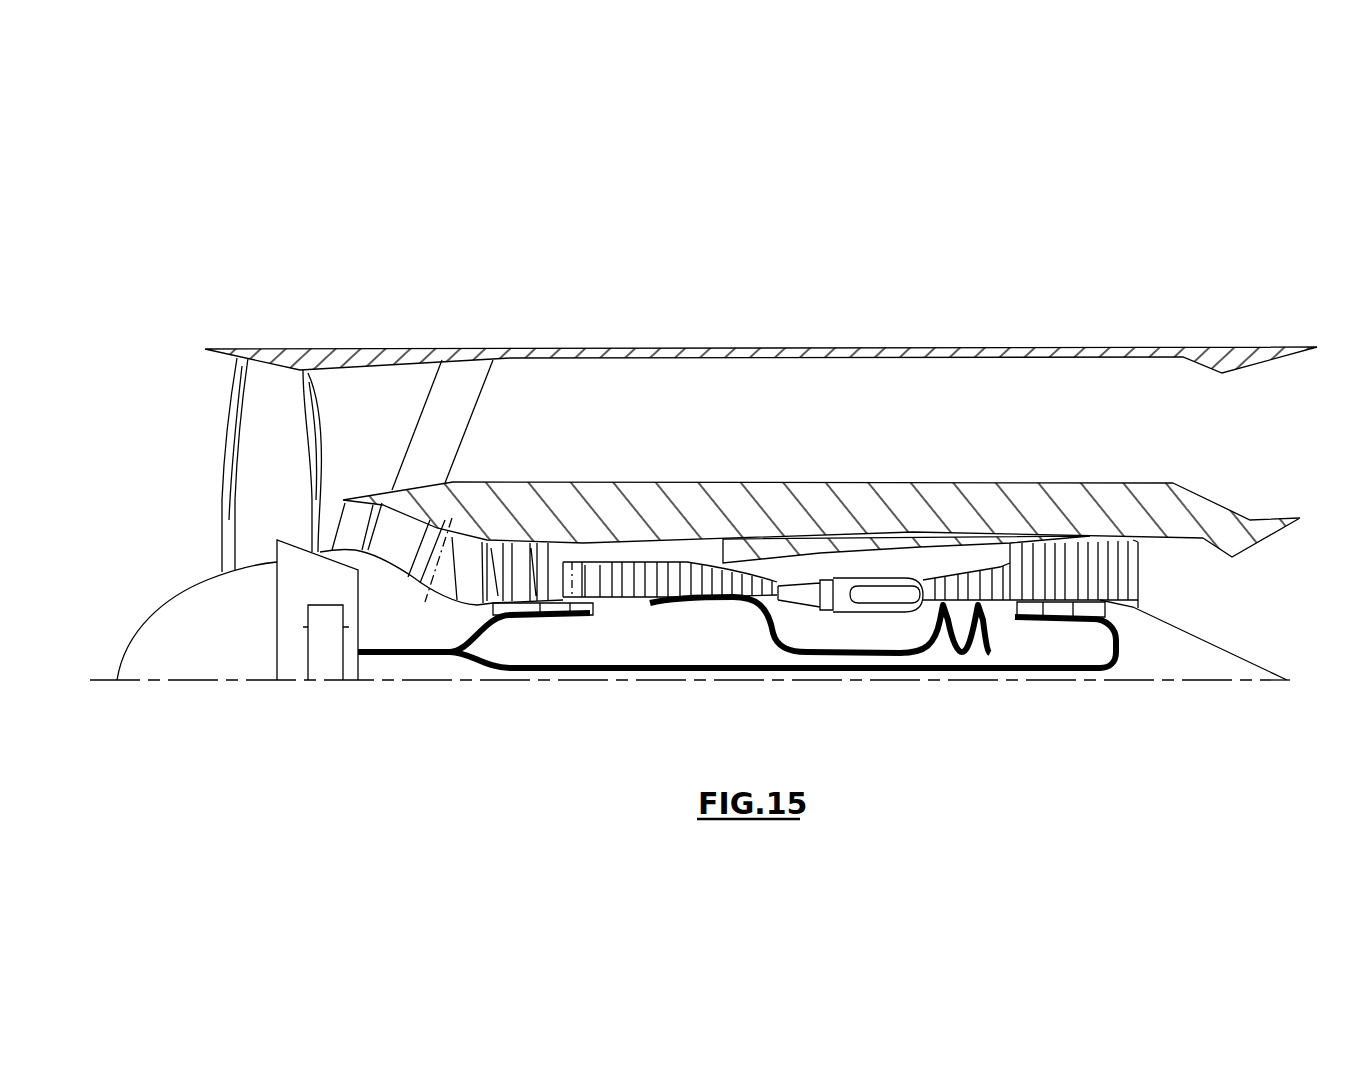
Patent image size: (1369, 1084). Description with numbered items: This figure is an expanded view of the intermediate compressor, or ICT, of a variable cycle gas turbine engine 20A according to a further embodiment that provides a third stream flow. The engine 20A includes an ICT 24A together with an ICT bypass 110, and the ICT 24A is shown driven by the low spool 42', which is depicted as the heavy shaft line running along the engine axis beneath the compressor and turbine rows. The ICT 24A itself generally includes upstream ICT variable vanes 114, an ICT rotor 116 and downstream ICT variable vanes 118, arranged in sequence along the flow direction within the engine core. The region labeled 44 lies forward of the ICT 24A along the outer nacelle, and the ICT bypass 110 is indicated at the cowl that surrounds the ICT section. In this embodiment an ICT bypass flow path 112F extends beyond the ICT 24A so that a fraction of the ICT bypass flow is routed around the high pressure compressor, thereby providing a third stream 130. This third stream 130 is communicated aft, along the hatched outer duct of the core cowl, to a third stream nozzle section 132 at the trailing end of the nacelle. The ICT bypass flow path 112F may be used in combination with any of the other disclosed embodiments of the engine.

The variable cycle gas turbine engine 20A is at (1146, 306).
The fan section 44 is at (556, 338).
The ICT 24A is at (648, 338).
The ICT bypass 110 is at (604, 540).
The upstream ICT variable vanes 114 is at (562, 505).
The ICT rotor 116 is at (582, 540).
The downstream ICT variable vanes 118 is at (630, 577).
The ICT bypass flow path 112F is at (652, 538).
The third stream 130 is at (950, 537).
The third stream nozzle section 132 is at (1240, 537).
The low spool 42' is at (737, 669).